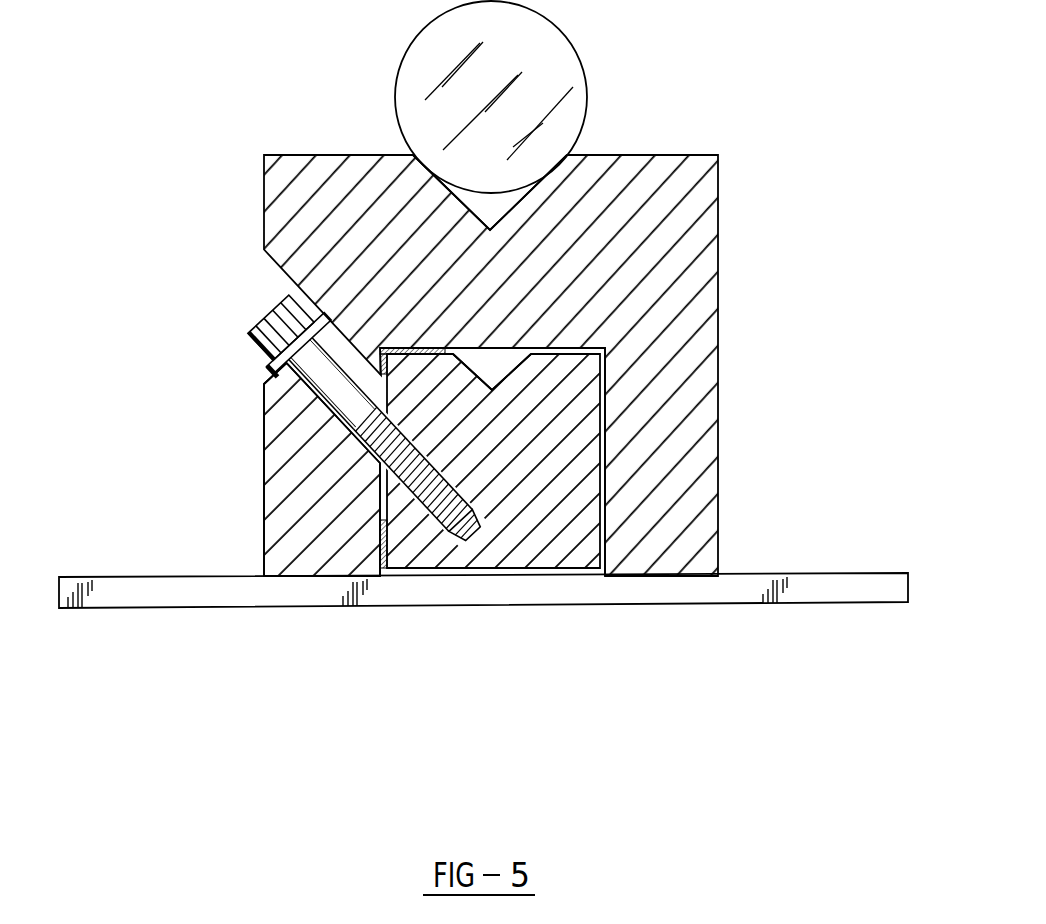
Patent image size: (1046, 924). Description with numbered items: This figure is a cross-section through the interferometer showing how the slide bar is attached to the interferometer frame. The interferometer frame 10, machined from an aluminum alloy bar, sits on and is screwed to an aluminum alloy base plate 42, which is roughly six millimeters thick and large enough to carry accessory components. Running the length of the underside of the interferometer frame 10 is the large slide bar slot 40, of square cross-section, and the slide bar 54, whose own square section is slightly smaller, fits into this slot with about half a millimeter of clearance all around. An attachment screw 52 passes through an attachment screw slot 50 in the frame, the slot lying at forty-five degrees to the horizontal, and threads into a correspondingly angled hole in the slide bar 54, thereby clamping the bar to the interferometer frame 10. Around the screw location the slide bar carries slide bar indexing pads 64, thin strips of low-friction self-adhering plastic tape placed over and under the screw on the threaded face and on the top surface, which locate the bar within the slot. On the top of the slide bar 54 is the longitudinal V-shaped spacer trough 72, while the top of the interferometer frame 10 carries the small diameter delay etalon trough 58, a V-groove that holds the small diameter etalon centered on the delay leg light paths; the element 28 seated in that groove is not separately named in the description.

The interferometer frame 10 is at (719, 274).
The ball 28 is at (583, 72).
The slide bar slot 40 is at (612, 420).
The base plate 42 is at (112, 578).
The attachment screw slots 50 is at (308, 386).
The attachment screws 52 is at (256, 318).
The slide bar 54 is at (585, 488).
The small diameter delay etalon trough 58 is at (513, 198).
The slide bar indexing pads 64 is at (424, 352).
The spacer trough 72 is at (508, 373).